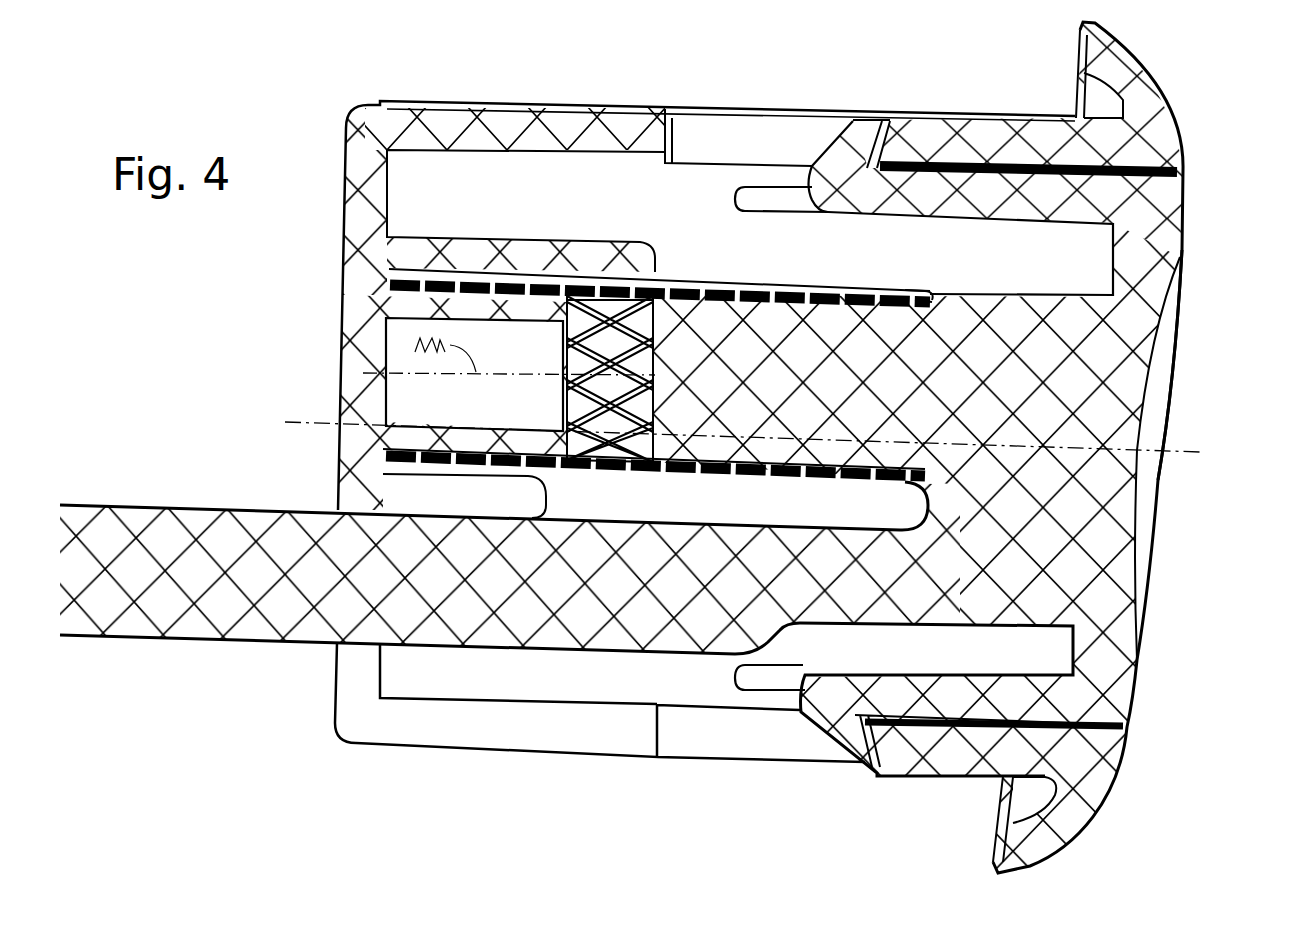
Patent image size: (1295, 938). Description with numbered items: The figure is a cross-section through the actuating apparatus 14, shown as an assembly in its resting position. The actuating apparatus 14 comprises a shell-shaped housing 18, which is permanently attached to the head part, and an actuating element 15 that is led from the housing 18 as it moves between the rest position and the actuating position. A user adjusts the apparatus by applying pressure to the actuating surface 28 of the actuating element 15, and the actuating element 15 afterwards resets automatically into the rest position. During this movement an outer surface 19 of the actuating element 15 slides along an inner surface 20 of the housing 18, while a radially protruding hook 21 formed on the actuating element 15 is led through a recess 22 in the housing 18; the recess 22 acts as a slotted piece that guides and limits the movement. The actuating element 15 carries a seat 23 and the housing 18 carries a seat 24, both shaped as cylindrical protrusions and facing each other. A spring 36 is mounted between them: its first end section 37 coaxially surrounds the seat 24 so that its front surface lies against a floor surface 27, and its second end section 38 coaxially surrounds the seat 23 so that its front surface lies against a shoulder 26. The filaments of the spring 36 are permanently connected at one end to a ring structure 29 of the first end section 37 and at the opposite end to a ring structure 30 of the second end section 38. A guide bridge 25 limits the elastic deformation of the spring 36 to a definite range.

The actuating apparatus 14 is at (1222, 126).
The actuating element 15 is at (1153, 238).
The housing 18 is at (574, 104).
The outer surface 19 is at (902, 150).
The inner surface 20 is at (955, 180).
The hook 21 is at (830, 120).
The recess 22 is at (695, 128).
The seat 23 is at (840, 345).
The seat 24 is at (510, 312).
The guide bridge 25 is at (468, 248).
The shoulder 26 is at (910, 292).
The floor surface 27 is at (405, 262).
The actuating surface 28 is at (1160, 327).
The ring structure 29 is at (385, 458).
The ring structure 30 is at (894, 487).
The spring 36 is at (700, 293).
The first end section 37 is at (385, 284).
The second end section 38 is at (930, 300).